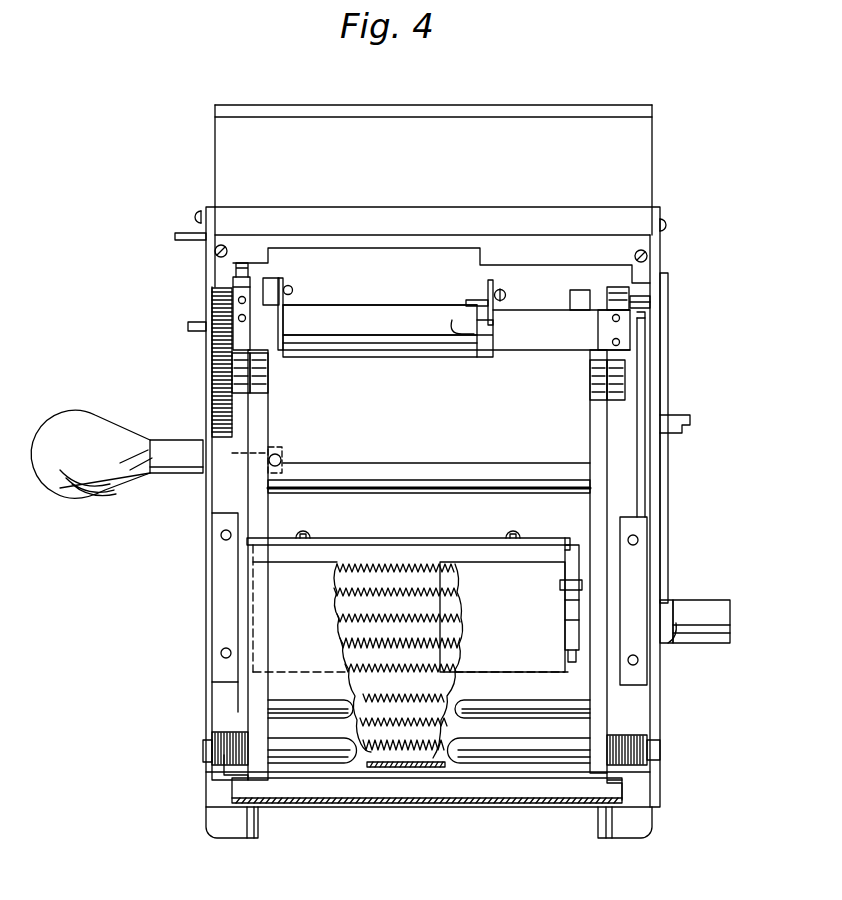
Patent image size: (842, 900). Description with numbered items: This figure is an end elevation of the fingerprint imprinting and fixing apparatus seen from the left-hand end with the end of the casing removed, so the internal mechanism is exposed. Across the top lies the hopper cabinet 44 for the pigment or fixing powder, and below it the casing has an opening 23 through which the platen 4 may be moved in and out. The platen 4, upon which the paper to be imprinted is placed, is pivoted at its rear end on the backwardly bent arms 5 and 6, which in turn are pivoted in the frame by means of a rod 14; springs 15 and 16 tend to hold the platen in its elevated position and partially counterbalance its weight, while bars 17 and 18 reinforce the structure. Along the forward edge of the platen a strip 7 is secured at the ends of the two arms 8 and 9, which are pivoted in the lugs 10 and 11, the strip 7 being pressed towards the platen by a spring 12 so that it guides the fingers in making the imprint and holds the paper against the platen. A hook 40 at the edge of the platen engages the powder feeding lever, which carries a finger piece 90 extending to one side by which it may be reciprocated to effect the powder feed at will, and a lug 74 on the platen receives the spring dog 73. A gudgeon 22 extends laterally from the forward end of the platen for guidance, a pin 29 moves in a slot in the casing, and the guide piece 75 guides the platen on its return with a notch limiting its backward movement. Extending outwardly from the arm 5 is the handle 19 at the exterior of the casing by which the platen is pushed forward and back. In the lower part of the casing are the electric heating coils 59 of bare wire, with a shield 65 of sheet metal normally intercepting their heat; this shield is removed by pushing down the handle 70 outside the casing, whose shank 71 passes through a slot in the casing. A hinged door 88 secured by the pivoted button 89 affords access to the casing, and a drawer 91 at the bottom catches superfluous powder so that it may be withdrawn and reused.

The hopper cabinet 44 is at (652, 171).
The opening 23 is at (350, 268).
The hook 40 is at (248, 263).
The lug 10 is at (280, 284).
The arm 8 is at (296, 314).
The platen 4 is at (420, 334).
The strip 7 is at (372, 345).
The arm 9 is at (452, 320).
The spring 12 is at (500, 317).
The lug 11 is at (486, 286).
The lug 74 is at (574, 290).
The gudgeon 22 is at (656, 302).
The finger piece 90 is at (188, 232).
The pin 29 is at (194, 322).
The guide piece 75 is at (212, 372).
The arm 5 is at (268, 427).
The arm 6 is at (592, 428).
The bar 18 is at (432, 470).
The handle 19 is at (180, 440).
The hinged door 88 is at (668, 390).
The pivoted button 89 is at (690, 428).
The spring dog 73 is at (580, 580).
The shank 71 is at (620, 610).
The handle 70 is at (712, 608).
The shield 65 is at (484, 577).
The electric heating coils 59 is at (390, 570).
The bar 17 is at (523, 692).
The rod 14 is at (497, 732).
The spring 15 is at (224, 732).
The spring 16 is at (628, 738).
The drawer 91 is at (386, 790).